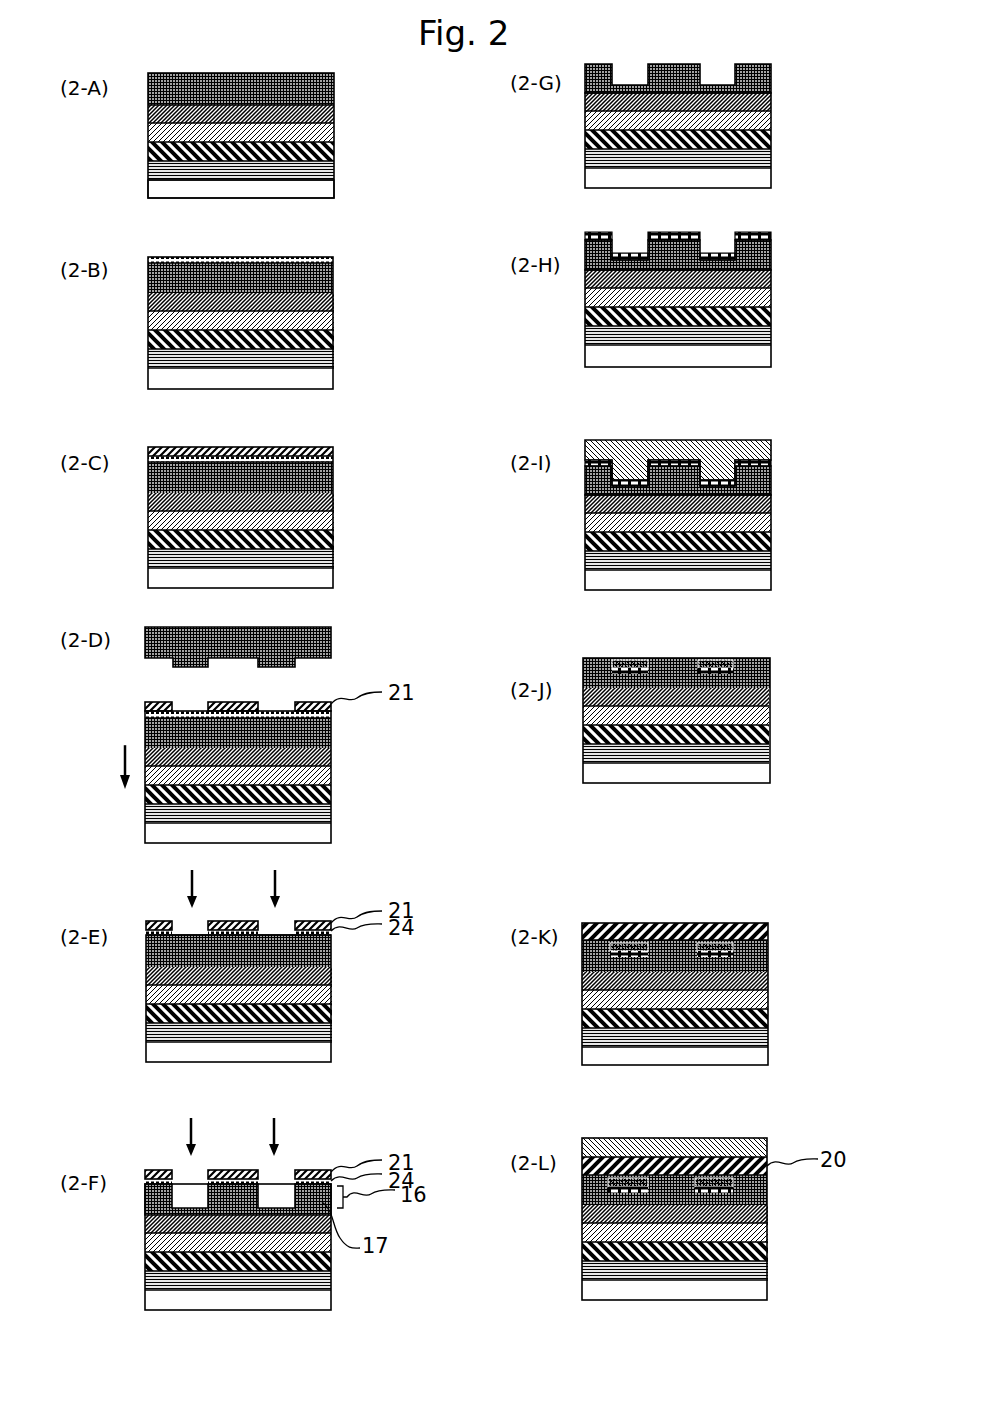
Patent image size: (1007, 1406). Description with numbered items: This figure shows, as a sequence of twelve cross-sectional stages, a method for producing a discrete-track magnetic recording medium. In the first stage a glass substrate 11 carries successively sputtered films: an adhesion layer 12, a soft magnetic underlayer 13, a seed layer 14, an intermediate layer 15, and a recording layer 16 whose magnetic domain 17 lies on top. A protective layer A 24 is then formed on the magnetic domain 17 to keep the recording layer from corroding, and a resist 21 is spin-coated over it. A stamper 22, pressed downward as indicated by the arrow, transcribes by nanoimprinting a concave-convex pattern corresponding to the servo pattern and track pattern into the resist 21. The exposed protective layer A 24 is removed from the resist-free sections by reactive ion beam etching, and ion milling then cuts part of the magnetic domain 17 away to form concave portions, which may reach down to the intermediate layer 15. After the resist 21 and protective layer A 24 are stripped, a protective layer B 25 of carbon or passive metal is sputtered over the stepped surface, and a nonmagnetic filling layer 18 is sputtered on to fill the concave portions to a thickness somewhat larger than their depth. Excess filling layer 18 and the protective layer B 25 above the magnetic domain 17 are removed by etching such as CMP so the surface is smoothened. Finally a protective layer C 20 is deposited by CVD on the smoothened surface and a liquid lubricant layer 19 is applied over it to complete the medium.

The substrate 11 is at (330, 196).
The adhesion layer 12 is at (330, 178).
The soft magnetic underlayer 13 is at (330, 158).
The seed layer 14 is at (330, 138).
The intermediate layer 15 is at (330, 118).
The recording layer 16 is at (325, 951).
The magnetic domain 17 is at (327, 97).
The filling layer 18 is at (722, 455).
The lubricant layer 19 is at (767, 1141).
The protective layer C 20 is at (675, 931).
The resist 21 is at (333, 448).
The stamper 22 is at (331, 640).
The protective layer A 24 is at (333, 260).
The protective layer B 25 is at (757, 232).